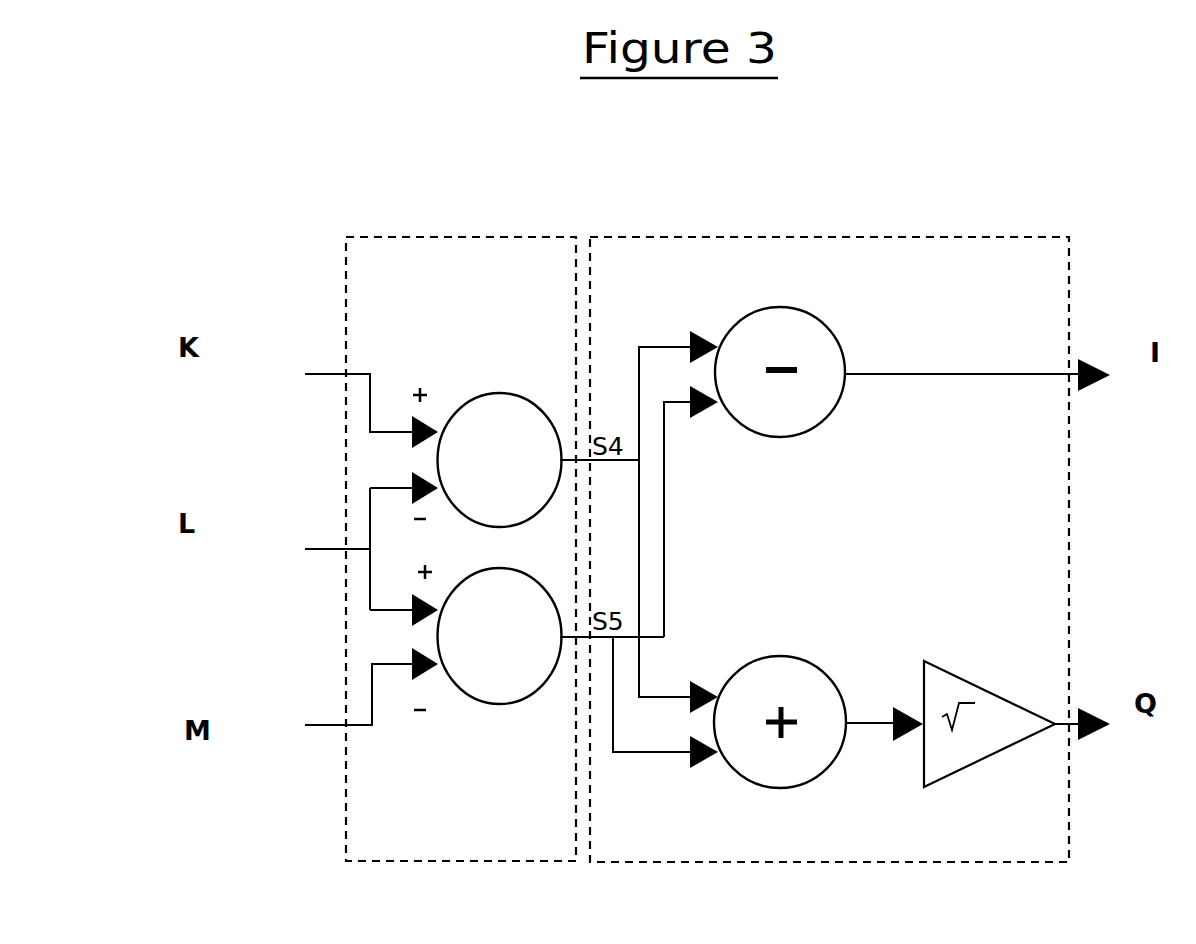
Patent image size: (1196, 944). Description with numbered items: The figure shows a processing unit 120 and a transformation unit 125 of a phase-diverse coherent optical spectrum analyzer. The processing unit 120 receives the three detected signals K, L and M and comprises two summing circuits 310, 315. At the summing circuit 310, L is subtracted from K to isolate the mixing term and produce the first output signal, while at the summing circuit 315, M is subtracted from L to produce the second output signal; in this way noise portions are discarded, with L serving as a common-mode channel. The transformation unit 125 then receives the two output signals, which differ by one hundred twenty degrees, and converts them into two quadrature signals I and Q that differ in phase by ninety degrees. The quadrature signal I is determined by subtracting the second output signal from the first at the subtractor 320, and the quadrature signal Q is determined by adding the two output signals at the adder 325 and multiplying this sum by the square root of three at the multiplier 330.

The processing unit 120 is at (364, 173).
The transformation unit 125 is at (715, 173).
The summing circuit 310 is at (497, 388).
The summing circuit 315 is at (497, 712).
The subtractor 320 is at (893, 297).
The adder 325 is at (852, 633).
The multiplier 330 is at (1030, 708).